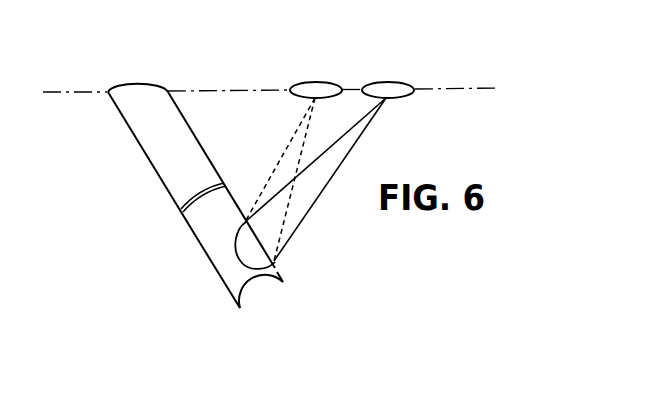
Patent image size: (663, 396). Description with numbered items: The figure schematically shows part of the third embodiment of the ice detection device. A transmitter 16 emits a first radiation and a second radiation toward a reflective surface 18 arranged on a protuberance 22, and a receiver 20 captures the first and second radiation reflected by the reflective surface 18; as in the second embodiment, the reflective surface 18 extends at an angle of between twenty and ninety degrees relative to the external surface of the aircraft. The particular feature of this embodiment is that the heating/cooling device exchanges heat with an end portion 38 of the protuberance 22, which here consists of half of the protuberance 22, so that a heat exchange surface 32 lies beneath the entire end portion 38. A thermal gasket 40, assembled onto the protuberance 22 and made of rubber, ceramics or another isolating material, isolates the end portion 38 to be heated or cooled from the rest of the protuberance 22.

The transmitter 16 is at (397, 87).
The reflective surface 18 is at (274, 258).
The receiver 20 is at (311, 88).
The protuberance 22 is at (158, 141).
The heat exchange surface 32 is at (223, 291).
The end portion 38 is at (265, 297).
The thermal gasket 40 is at (183, 214).